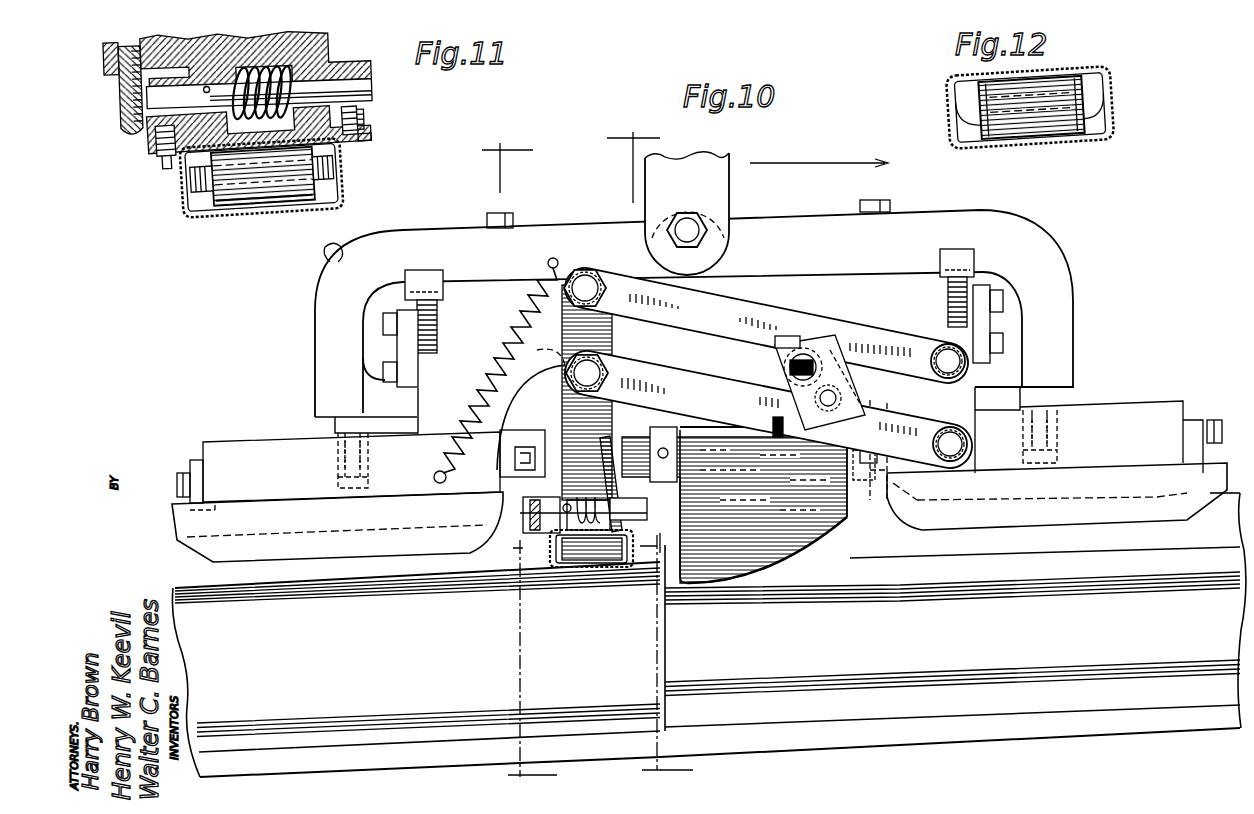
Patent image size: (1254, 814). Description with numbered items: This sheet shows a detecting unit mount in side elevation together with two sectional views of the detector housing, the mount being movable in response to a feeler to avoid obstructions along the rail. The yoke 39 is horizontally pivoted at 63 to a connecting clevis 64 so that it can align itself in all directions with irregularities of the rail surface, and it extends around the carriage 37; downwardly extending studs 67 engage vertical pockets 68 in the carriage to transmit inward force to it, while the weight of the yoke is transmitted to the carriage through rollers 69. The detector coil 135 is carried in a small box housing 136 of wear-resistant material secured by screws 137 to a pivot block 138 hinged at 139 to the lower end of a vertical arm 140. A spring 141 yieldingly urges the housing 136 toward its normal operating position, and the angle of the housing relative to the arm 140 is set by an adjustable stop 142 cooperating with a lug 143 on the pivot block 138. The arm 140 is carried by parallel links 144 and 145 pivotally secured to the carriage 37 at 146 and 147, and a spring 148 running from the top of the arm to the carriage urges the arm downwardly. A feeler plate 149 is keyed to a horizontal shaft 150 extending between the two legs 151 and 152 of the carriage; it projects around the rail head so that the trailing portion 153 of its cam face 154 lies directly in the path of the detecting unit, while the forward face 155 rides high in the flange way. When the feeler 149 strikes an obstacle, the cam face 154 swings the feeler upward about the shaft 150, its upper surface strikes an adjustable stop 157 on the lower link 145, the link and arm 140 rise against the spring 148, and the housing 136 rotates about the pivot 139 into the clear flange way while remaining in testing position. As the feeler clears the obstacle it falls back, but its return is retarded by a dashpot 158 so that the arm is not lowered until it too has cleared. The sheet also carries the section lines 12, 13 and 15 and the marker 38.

In FIG. 10, the section line 12- 12 is at (589, 547).
In FIG. 10, the section line 13- 13 is at (515, 460).
In FIG. 10, the section line 15- 15 is at (650, 454).
In FIG. 10, the carriage 37 is at (272, 450).
In FIG. 10, the guide shoe 38 is at (263, 548).
In FIG. 10, the yoke 39 is at (325, 307).
In FIG. 10, the horizontal pivot 63 is at (690, 232).
In FIG. 10, the connecting clevis 64 is at (722, 178).
In FIG. 10, the studs 67 is at (337, 458).
In FIG. 10, the vertical pockets 68 is at (337, 476).
In FIG. 10, the rollers 69 is at (427, 318).
In FIG. 11, the detector coil 135 is at (253, 208).
In FIG. 12, the detector coil 135 is at (1026, 132).
In FIG. 10, the detector coil 135 is at (576, 568).
In FIG. 11, the box housing 136 is at (343, 196).
In FIG. 12, the box housing 136 is at (1101, 140).
In FIG. 10, the box housing 136 is at (612, 568).
In FIG. 11, the screws 137 is at (372, 150).
In FIG. 11, the pivot block 138 is at (372, 113).
In FIG. 11, the hinge pivot 139 is at (372, 95).
In FIG. 10, the hinge pivot 139 is at (640, 510).
In FIG. 10, the vertical arm 140 is at (612, 333).
In FIG. 11, the spring 141 is at (267, 68).
In FIG. 10, the spring 141 is at (596, 484).
In FIG. 11, the adjustable stop 142 is at (122, 84).
In FIG. 10, the adjustable stop 142 is at (523, 510).
In FIG. 10, the lug 143 is at (523, 543).
In FIG. 10, the upper parallel link 144 is at (720, 303).
In FIG. 10, the lower parallel link 145 is at (695, 378).
In FIG. 10, the link pivot 146 is at (946, 350).
In FIG. 10, the link pivot 147 is at (960, 438).
In FIG. 10, the spring 148 is at (498, 392).
In FIG. 10, the feeler plate 149 is at (755, 552).
In FIG. 10, the horizontal shaft 150 is at (633, 445).
In FIG. 10, the carriage leg 151 is at (238, 447).
In FIG. 10, the carriage leg 152 is at (1157, 392).
In FIG. 10, the trailing portion 153 is at (688, 583).
In FIG. 10, the cam face 154 is at (800, 548).
In FIG. 10, the forward face 155 is at (843, 520).
In FIG. 10, the adjustable stop 157 is at (771, 420).
In FIG. 10, the dashpot 158 is at (838, 358).